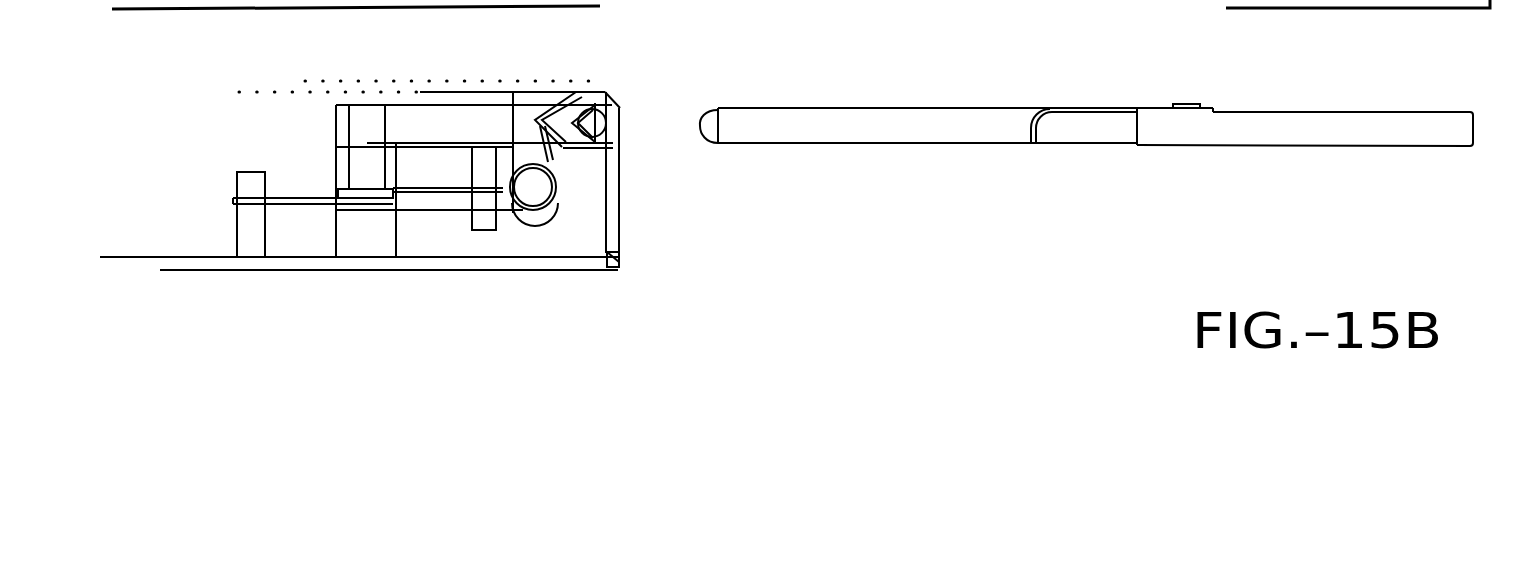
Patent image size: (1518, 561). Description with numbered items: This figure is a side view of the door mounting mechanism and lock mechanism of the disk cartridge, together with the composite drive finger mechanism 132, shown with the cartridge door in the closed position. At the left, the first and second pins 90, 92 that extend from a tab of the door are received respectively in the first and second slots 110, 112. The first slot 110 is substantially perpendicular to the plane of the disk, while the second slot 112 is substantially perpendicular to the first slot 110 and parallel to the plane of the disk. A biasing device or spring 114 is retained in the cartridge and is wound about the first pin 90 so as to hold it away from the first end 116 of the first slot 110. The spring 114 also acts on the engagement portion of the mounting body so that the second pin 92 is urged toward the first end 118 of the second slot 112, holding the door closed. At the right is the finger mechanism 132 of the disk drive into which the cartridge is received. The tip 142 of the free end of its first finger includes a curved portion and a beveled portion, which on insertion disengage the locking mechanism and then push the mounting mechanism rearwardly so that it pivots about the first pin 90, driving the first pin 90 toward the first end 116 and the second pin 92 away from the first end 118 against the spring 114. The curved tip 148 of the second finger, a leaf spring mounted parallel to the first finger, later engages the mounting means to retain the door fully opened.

The first pin 90 is at (520, 215).
The second pin 92 is at (618, 107).
The first slot 110 is at (550, 213).
The second slot 112 is at (480, 117).
The spring 114 is at (420, 215).
The first end of first slot 116 is at (530, 190).
The first end of second slot 118 is at (612, 147).
The finger mechanism 132 is at (1268, 231).
The tip 142 is at (710, 112).
The curved tip 148 is at (1048, 122).